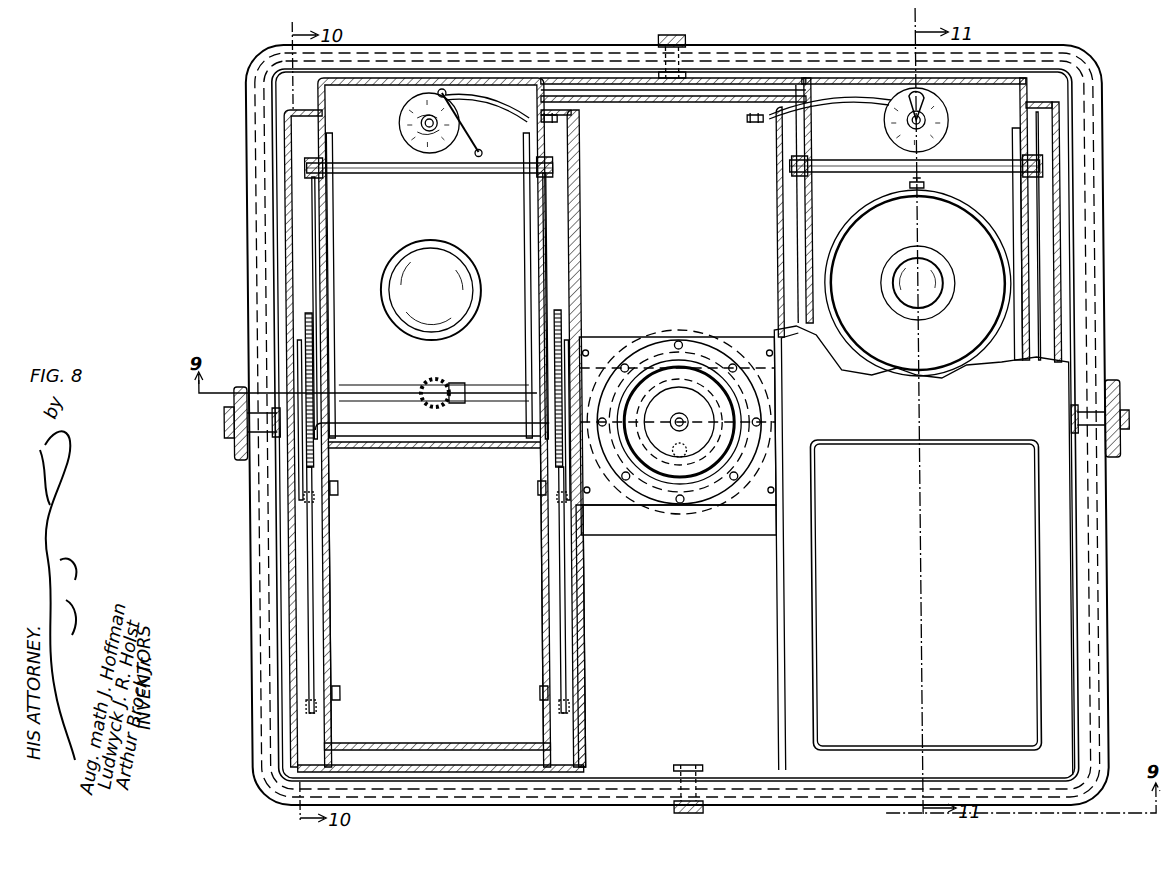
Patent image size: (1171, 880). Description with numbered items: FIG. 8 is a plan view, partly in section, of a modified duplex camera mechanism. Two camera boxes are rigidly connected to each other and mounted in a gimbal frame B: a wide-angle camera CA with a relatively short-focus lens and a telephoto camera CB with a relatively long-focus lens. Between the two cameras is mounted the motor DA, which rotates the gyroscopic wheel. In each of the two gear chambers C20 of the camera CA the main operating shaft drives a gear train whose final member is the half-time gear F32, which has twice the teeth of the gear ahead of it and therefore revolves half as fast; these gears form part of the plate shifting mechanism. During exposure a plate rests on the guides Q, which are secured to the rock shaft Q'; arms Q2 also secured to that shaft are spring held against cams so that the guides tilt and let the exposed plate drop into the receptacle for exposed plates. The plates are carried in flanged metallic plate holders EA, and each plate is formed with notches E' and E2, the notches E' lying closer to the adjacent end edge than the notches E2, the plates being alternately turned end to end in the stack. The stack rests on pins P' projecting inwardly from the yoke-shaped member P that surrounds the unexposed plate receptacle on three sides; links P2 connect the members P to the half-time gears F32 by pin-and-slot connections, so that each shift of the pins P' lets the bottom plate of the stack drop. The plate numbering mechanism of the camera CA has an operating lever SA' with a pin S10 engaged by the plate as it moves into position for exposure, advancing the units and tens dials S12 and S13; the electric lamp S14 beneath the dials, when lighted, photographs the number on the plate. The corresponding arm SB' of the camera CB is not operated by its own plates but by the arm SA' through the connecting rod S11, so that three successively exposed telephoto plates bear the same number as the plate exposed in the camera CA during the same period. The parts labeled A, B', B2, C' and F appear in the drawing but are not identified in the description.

The gimbal frame B is at (658, 425).
The handle nut B' is at (666, 408).
The handle knob A is at (232, 450).
The hinge B2 is at (685, 766).
The casing partition C' is at (787, 424).
The gear chamber C20 is at (592, 190).
The operating lever SA' is at (405, 123).
The units dial S12 is at (417, 122).
The tens dial S13 is at (418, 134).
The connecting rod S11 is at (477, 106).
The pin S10 is at (482, 152).
The electric lamp S14 is at (556, 124).
The rock shaft Q' is at (673, 160).
The guides Q is at (585, 258).
The arms Q2 is at (315, 238).
The half-time gear F32 is at (590, 298).
The rod F is at (300, 447).
The yoke shaped member P is at (433, 358).
The motor DA is at (677, 432).
The notch E' is at (438, 481).
The notch E2 is at (337, 690).
The pins P' is at (436, 609).
The links P2 is at (308, 588).
The flanged metallic plate holder EA is at (432, 422).
The camera CA is at (580, 604).
The camera CB is at (923, 550).
The operating arm SB' is at (890, 231).